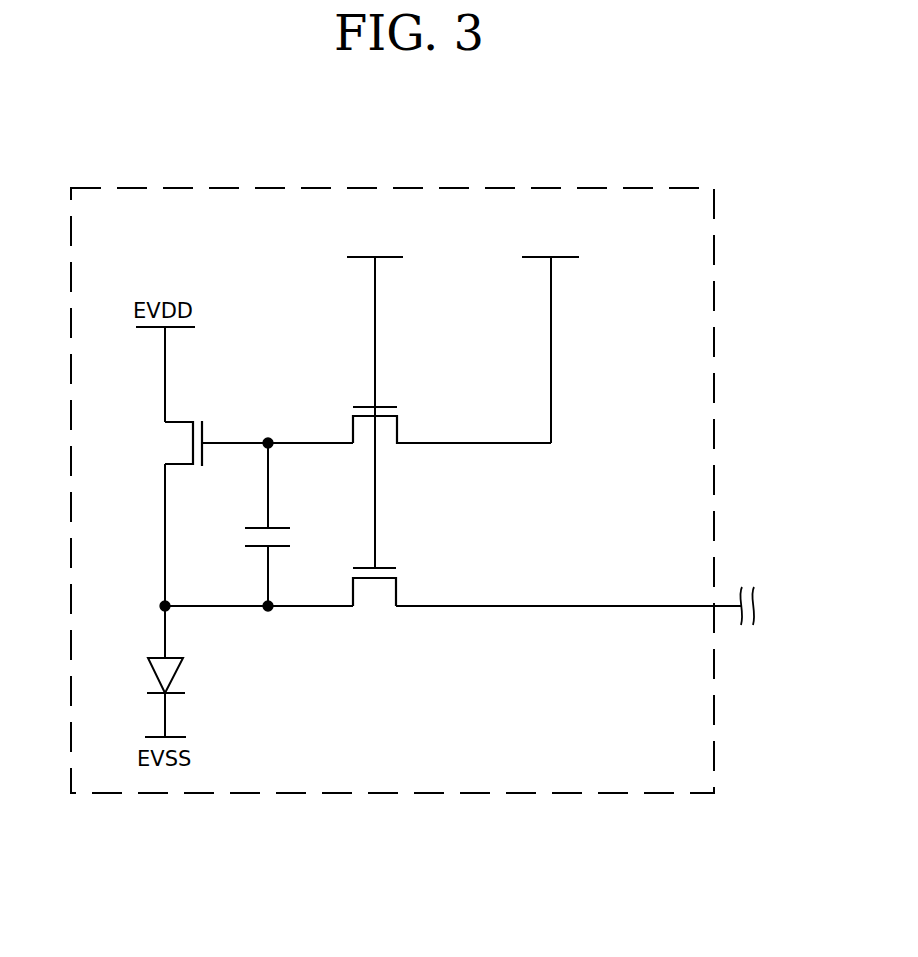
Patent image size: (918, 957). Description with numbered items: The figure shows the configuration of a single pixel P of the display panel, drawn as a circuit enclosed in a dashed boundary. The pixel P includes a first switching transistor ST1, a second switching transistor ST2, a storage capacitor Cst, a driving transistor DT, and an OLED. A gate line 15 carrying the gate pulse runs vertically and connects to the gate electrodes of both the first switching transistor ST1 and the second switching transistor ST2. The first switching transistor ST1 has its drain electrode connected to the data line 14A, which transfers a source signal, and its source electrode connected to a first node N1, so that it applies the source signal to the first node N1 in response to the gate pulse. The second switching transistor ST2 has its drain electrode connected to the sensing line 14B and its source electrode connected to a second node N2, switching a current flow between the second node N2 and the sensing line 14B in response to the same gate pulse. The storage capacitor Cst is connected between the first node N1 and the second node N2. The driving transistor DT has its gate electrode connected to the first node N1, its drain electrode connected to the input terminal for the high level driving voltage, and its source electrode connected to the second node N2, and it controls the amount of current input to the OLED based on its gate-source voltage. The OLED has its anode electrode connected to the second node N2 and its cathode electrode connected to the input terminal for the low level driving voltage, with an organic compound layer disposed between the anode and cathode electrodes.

The pixel P is at (725, 219).
The gate line 15 is at (375, 324).
The data line 14A is at (551, 340).
The sensing line 14B is at (593, 606).
The first node N1 is at (270, 440).
The second node N2 is at (270, 610).
The driving transistor DT is at (209, 443).
The first switching transistor ST1 is at (452, 425).
The second switching transistor ST2 is at (397, 587).
The storage capacitor Cst is at (249, 537).
The element OLED is at (197, 697).